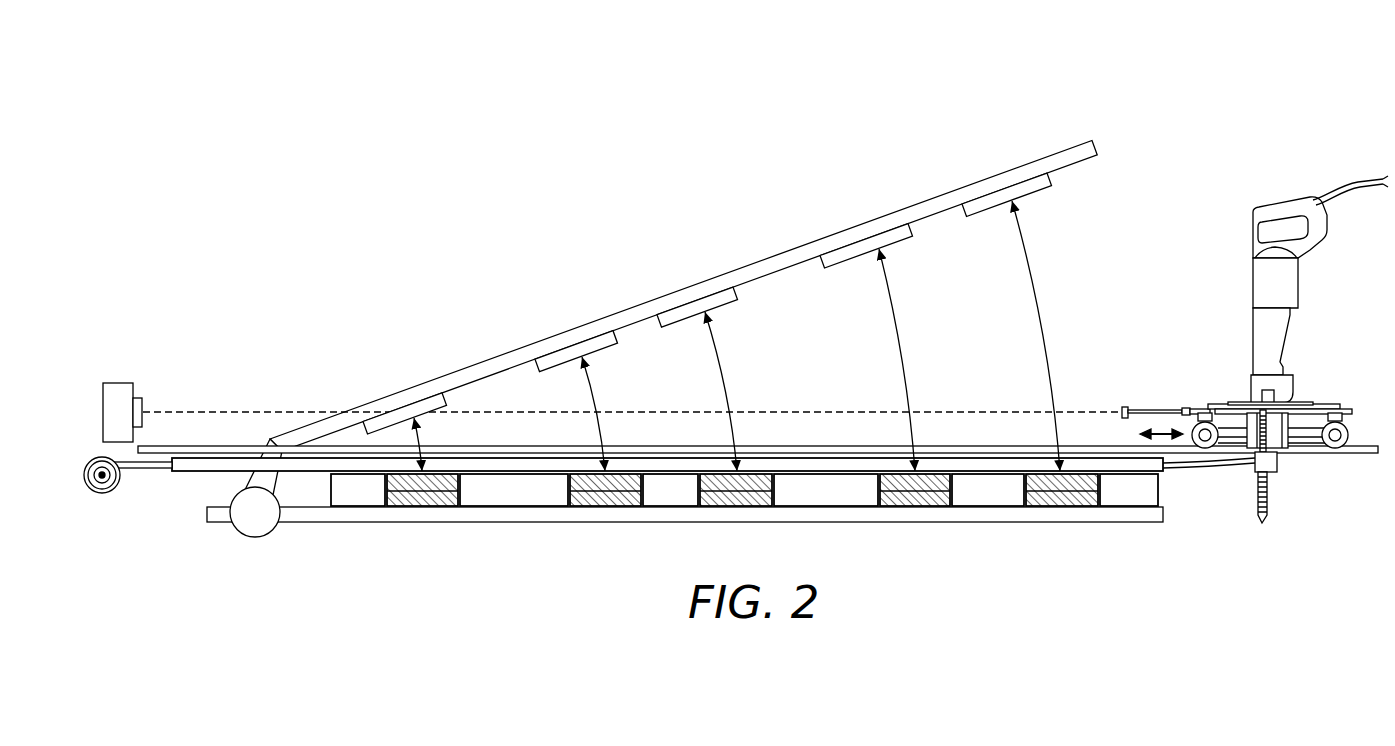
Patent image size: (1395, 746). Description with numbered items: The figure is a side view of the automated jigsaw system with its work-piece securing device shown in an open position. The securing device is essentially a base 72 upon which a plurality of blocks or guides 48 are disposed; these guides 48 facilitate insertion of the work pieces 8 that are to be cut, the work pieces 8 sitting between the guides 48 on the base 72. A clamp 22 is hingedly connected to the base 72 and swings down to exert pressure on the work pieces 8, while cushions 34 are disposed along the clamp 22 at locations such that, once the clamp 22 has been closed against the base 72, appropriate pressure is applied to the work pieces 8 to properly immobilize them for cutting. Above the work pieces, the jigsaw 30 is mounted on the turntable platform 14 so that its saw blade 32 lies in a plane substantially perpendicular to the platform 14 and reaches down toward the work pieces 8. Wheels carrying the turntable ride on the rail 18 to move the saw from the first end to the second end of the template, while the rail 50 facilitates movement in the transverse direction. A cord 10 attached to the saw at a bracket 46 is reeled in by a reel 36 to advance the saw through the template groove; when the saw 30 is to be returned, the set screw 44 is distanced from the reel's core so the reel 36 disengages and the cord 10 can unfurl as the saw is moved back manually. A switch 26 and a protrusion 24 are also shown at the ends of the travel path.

The work piece 8 is at (407, 506).
The cord 10 is at (124, 461).
The platform 14 is at (1217, 404).
The rail 18 is at (967, 445).
The clamp 22 is at (622, 311).
The protrusion 24 is at (1123, 405).
The switch 26 is at (143, 403).
The jigsaw 30 is at (1293, 287).
The saw blade 32 is at (1266, 487).
The cushion 34 is at (446, 402).
The reel 36 is at (92, 481).
The set screw 44 is at (112, 476).
The bracket 46 is at (1278, 458).
The guide 48 is at (342, 501).
The rail 50 is at (1193, 418).
The base 72 is at (328, 516).